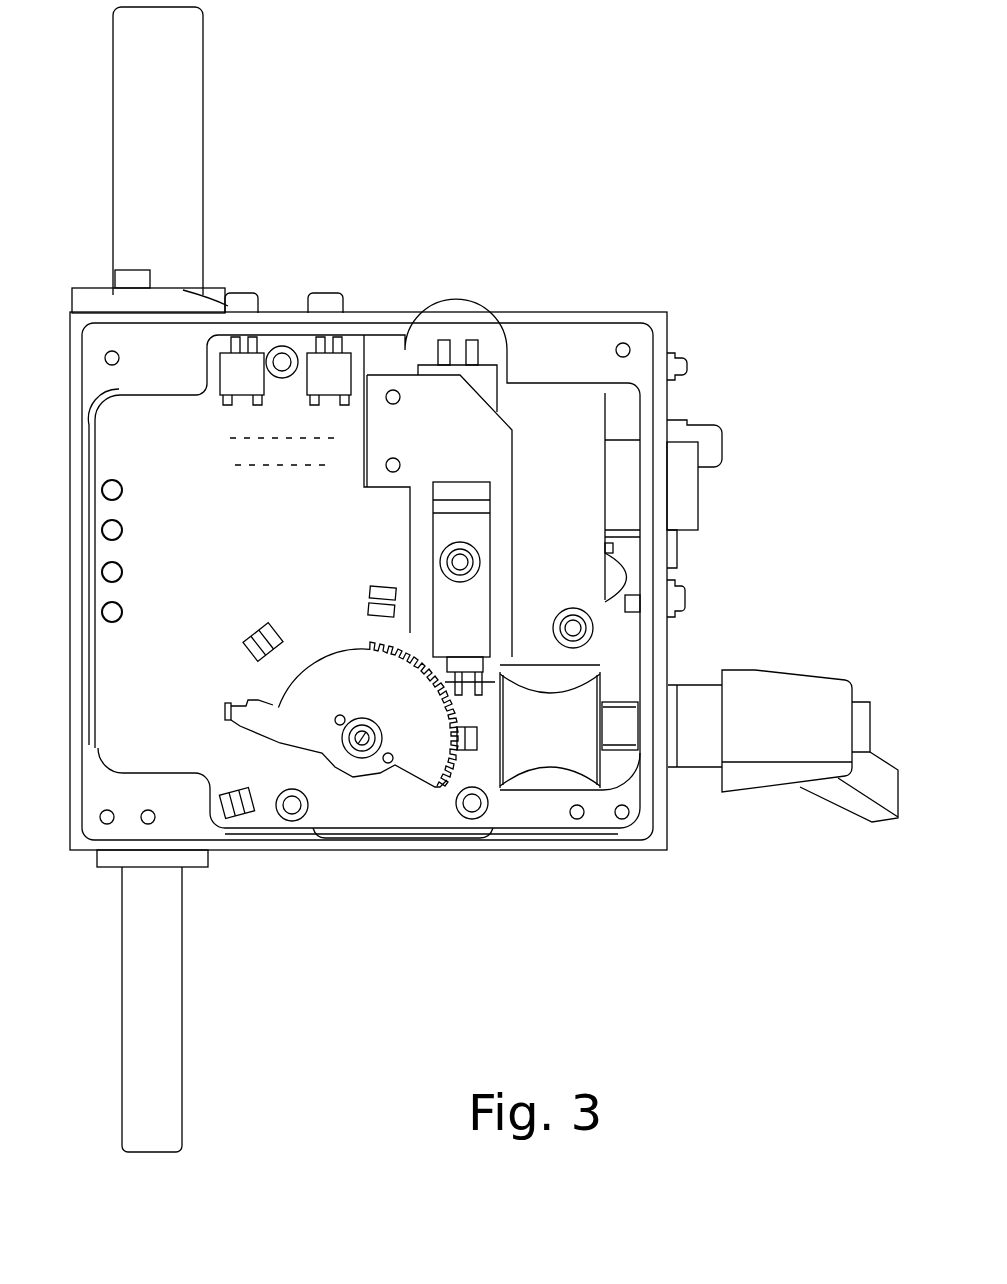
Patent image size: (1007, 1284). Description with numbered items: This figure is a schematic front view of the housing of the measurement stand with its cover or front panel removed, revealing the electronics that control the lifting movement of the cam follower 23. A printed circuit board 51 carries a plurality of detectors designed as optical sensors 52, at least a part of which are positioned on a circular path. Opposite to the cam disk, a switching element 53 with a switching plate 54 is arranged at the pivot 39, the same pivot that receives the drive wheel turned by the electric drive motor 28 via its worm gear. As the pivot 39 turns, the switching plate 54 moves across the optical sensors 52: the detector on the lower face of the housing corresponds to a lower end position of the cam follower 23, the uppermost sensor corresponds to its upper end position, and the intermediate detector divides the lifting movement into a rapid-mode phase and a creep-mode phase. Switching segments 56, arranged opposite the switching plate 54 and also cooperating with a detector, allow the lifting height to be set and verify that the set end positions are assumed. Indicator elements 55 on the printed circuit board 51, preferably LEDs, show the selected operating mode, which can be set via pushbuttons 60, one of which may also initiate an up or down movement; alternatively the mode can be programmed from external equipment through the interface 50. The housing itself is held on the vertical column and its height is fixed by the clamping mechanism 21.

The clamping mechanism 21 is at (776, 648).
The cam follower 23 is at (155, 1078).
The electric drive motor 28 is at (483, 372).
The pivot 39 is at (360, 760).
The interface 50 is at (712, 478).
The printed circuit board 51 is at (107, 712).
The optical sensor 52 is at (370, 594).
The switching element 53 is at (432, 752).
The switching plate 54 is at (224, 710).
The indicator elements 55 is at (102, 530).
The switching segments 56 is at (473, 819).
The pushbuttons 60 is at (325, 279).